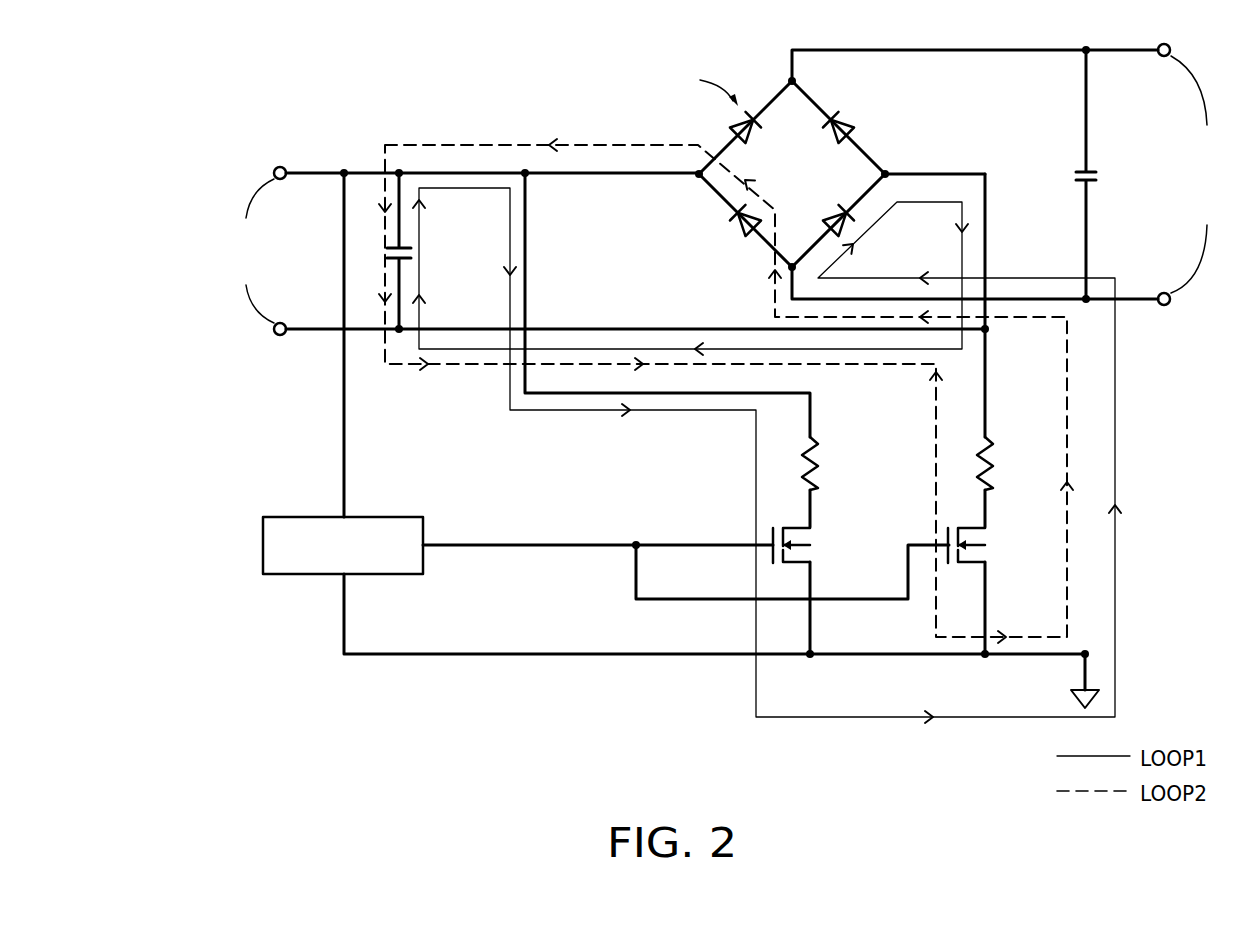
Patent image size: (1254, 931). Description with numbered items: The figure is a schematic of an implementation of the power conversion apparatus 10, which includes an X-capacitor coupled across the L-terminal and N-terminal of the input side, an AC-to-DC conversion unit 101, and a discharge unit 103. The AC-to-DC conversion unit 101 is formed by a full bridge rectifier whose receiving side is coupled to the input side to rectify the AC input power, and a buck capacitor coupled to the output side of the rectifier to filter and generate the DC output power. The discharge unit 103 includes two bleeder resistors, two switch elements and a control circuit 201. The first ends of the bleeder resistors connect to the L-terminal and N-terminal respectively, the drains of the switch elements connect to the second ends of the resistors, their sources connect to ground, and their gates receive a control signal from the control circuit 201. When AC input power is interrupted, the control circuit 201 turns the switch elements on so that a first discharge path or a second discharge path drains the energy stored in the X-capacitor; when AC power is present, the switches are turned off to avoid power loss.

The power conversion apparatus 10 is at (663, 443).
The AC-to-DC conversion unit 101 is at (235, 680).
The discharge unit 103 is at (653, 640).
The control circuit 201 is at (392, 517).